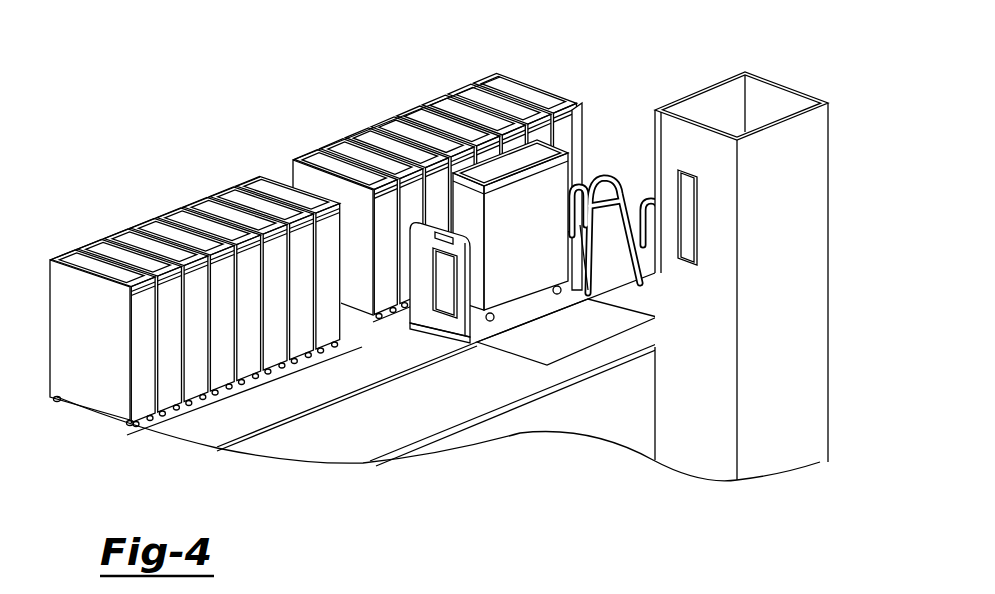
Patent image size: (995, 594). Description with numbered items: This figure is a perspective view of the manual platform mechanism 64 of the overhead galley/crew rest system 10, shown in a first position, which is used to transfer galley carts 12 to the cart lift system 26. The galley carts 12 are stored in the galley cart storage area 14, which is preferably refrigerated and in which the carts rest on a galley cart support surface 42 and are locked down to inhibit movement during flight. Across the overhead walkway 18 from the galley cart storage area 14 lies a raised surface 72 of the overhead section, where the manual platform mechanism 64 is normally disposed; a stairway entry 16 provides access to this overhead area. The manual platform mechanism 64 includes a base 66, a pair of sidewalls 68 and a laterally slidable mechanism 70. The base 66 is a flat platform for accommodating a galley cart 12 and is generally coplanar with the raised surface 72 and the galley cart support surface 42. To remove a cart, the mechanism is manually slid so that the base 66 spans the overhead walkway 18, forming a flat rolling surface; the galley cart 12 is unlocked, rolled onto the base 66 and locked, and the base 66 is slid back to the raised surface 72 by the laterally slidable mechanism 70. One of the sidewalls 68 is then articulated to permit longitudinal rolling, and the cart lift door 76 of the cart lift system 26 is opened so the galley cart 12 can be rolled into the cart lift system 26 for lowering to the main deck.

The overhead galley/crew rest system 10 is at (296, 110).
The galley cart 12 is at (467, 86).
The galley cart storage area 14 is at (146, 185).
The stairway entry 16 is at (596, 176).
The overhead walkway 18 is at (287, 420).
The cart lift system 26 is at (753, 246).
The galley cart support surface 42 is at (352, 328).
The manual platform mechanism 64 is at (510, 368).
The base 66 is at (527, 310).
The sidewalls 68 is at (442, 320).
The laterally slidable mechanism 70 is at (603, 292).
The raised surface 72 is at (402, 426).
The cart lift door 76 is at (697, 123).